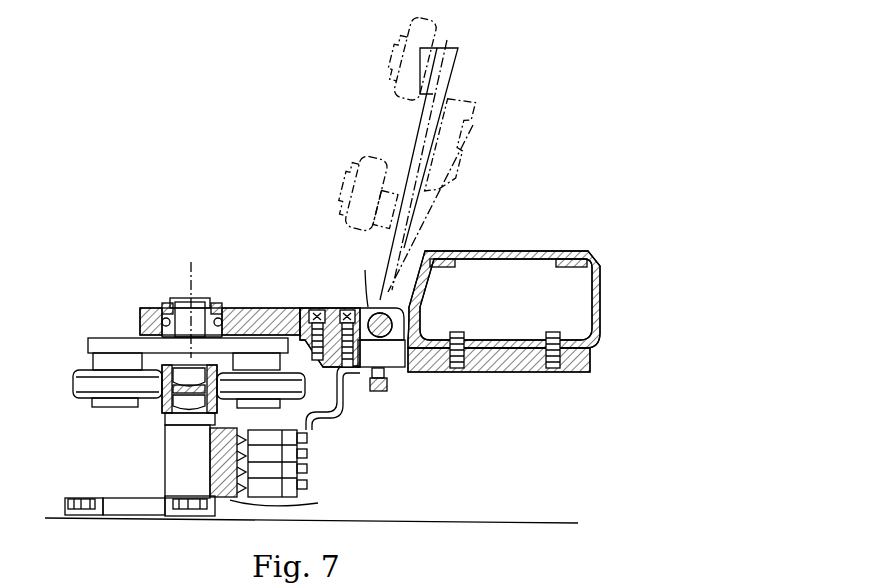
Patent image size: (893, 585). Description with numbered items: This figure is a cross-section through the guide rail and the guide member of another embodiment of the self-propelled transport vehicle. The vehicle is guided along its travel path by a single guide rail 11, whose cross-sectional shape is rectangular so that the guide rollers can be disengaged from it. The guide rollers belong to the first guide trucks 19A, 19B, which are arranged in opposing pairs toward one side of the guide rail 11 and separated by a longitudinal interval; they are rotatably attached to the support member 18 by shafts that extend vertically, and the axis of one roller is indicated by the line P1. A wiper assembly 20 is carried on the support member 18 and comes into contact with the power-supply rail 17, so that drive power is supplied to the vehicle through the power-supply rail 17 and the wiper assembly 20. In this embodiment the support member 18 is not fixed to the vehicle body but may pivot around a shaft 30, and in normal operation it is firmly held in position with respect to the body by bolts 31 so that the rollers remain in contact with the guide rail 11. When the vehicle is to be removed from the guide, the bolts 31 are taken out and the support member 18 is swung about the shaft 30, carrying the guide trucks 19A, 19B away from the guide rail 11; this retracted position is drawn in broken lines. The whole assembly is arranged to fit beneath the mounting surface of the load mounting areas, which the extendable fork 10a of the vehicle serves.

The fork 10a is at (500, 253).
The support member 18 is at (473, 123).
The first guide truck 19A is at (392, 88).
The first guide truck 19B is at (362, 158).
The pivot axis P1 is at (190, 272).
The bolts 31 is at (342, 307).
The shaft 30 is at (398, 342).
The guide rail 11 is at (162, 410).
The wiper assembly 20 is at (292, 472).
The power-supply rail 17 is at (290, 504).